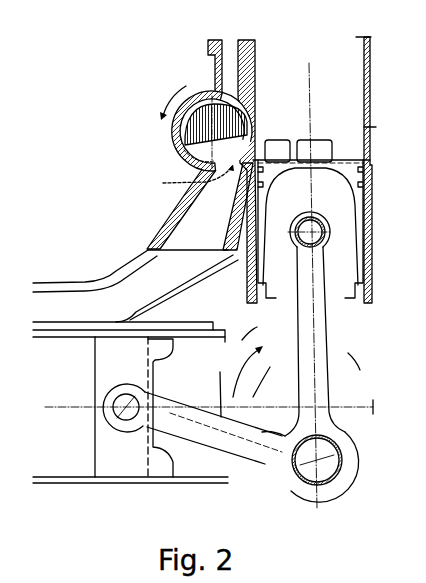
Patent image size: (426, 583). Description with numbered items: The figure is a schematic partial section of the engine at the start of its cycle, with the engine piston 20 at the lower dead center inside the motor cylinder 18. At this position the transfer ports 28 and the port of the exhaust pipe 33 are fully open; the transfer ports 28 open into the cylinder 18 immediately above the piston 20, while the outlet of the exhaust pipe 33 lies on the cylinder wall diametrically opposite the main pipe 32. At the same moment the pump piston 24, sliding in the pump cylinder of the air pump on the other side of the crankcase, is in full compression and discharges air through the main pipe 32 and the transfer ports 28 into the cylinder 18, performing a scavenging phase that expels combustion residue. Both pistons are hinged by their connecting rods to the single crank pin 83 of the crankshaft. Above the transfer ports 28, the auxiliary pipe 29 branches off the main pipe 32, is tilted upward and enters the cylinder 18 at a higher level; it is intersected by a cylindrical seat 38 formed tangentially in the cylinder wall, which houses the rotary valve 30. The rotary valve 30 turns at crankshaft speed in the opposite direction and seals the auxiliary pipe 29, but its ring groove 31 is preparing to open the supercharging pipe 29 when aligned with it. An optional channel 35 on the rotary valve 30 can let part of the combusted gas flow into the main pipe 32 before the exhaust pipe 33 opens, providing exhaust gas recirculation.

The motor cylinder 18 is at (251, 61).
The engine piston 20 is at (368, 188).
The pump piston 24 is at (108, 362).
The transfer ports 28 is at (326, 149).
The auxiliary pipe 29 is at (254, 124).
The rotary valve 30 is at (174, 131).
The ring groove 31 is at (198, 156).
The main pipe 32 is at (155, 273).
The exhaust pipe 33 is at (373, 141).
The channel 35 is at (206, 101).
The cylindrical seat 38 is at (183, 85).
The crank pin 83 is at (330, 455).